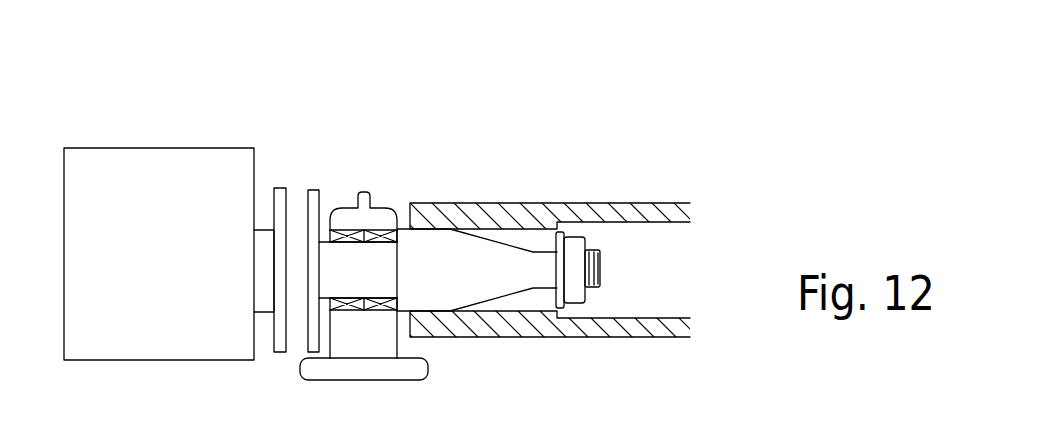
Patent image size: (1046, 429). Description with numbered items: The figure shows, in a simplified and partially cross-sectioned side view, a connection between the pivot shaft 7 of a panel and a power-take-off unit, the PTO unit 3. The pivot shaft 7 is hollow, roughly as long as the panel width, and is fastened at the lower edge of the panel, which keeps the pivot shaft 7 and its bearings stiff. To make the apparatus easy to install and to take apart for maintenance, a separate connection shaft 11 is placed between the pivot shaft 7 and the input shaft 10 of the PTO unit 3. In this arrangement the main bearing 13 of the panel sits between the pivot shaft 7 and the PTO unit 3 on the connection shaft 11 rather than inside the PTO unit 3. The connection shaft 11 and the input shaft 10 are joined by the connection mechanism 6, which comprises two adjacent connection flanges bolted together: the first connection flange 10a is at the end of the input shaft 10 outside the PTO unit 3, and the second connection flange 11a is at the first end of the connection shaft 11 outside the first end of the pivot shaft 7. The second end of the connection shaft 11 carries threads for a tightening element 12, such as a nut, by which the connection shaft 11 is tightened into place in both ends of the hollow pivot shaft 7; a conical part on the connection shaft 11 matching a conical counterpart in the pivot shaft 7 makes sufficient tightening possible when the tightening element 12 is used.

The PTO unit 3 is at (110, 155).
The connection mechanism 6 is at (323, 74).
The pivot shaft 7 is at (653, 208).
The input shaft 10 is at (268, 230).
The first connection flange 10a is at (279, 190).
The connection shaft 11 is at (513, 255).
The second connection flange 11a is at (318, 193).
The tightening element 12 is at (583, 240).
The main bearing 13 is at (392, 210).